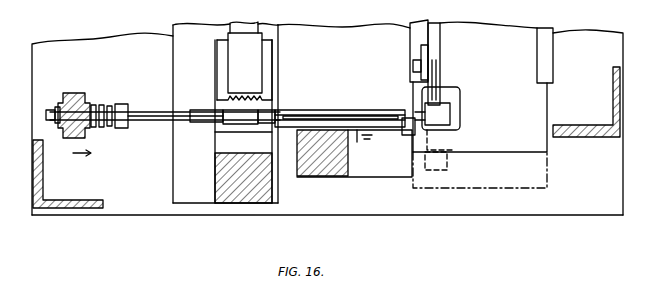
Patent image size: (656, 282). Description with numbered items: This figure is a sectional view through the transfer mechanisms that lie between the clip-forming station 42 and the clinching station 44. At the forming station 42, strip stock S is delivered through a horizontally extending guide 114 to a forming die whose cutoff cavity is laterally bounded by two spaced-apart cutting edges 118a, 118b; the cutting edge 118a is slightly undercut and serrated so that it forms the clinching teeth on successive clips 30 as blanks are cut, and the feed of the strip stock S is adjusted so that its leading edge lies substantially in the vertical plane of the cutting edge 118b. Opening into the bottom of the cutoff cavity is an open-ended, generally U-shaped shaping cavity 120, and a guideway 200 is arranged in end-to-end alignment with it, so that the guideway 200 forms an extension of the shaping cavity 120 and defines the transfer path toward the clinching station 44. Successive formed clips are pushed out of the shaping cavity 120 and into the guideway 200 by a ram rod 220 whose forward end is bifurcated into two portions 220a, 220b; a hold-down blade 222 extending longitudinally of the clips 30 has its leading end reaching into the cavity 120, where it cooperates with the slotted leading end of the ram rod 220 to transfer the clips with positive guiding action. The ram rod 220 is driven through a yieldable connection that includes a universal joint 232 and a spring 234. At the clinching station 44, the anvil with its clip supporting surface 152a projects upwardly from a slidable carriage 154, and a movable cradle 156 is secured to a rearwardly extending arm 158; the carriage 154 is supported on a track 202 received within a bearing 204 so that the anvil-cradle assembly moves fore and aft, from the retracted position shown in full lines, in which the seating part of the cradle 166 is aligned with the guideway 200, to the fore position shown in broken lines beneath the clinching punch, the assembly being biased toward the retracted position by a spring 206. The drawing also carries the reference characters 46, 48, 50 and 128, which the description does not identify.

The strip stock S is at (230, 29).
The clip 30 is at (240, 134).
The clip-forming station 42 is at (225, 146).
The clinching station 44 is at (470, 102).
The base plate 46 is at (118, 210).
The left bracket 48 is at (69, 208).
The right bracket 50 is at (622, 112).
The guide 114 is at (256, 52).
The cutting edge 118a is at (262, 97).
The cutting edge 118b is at (262, 132).
The shaping cavity 120 is at (270, 112).
The support block 128 is at (251, 203).
The clip supporting surface 152a is at (452, 118).
The slidable carriage 154 is at (458, 142).
The movable cradle 156 is at (438, 103).
The rearwardly extending arm 158 is at (440, 42).
The seating part of the cradle 166 is at (320, 176).
The guideway 200 is at (335, 110).
The track 202 is at (546, 118).
The bearing 204 is at (553, 58).
The spring 206 is at (410, 26).
The ram rod 220 is at (148, 120).
The bifurcated forward end portion 220a is at (201, 118).
The bifurcated forward end portion 220b is at (205, 124).
The hold-down blade 222 is at (368, 135).
The universal joint 232 is at (78, 93).
The spring 234 is at (103, 105).